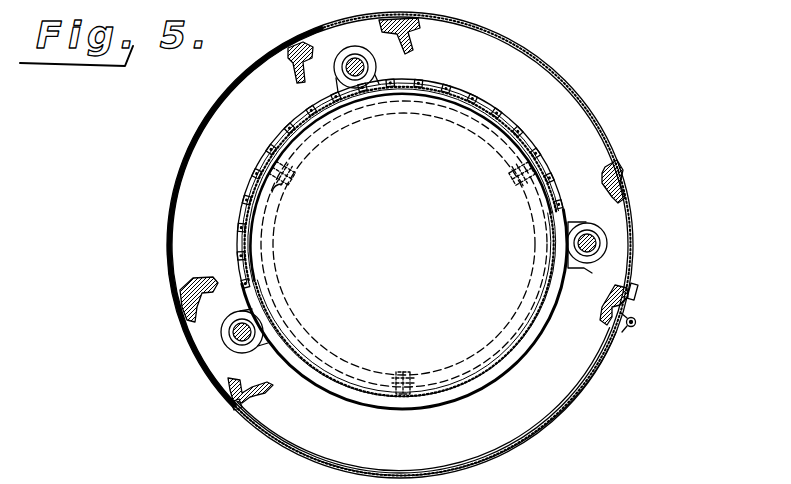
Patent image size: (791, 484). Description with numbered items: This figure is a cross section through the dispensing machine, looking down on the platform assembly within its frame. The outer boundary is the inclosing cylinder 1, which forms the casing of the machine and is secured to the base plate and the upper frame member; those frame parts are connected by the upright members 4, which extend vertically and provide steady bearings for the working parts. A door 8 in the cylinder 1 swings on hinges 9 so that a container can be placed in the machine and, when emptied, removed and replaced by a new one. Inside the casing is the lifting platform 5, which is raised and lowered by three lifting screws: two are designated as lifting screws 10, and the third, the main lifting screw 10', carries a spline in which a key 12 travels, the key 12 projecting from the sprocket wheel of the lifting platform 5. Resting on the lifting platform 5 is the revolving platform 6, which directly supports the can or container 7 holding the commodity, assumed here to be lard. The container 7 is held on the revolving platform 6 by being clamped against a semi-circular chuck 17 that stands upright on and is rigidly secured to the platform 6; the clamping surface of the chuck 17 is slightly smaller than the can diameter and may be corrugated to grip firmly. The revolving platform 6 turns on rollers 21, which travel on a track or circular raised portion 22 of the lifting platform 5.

The inclosing cylinder 1 is at (222, 91).
The upright members 4 is at (285, 68).
The lifting platform 5 is at (342, 56).
The revolving platform 6 is at (522, 352).
The can or container 7 is at (451, 103).
The door 8 is at (530, 437).
The hinges 9 is at (636, 322).
The lifting screws 10 is at (305, 218).
The main lifting screw 10' is at (633, 237).
The key 12 is at (592, 273).
The semi-circular chuck 17 is at (478, 103).
The rollers 21 is at (272, 192).
The track or circular raised portion 22 is at (420, 111).